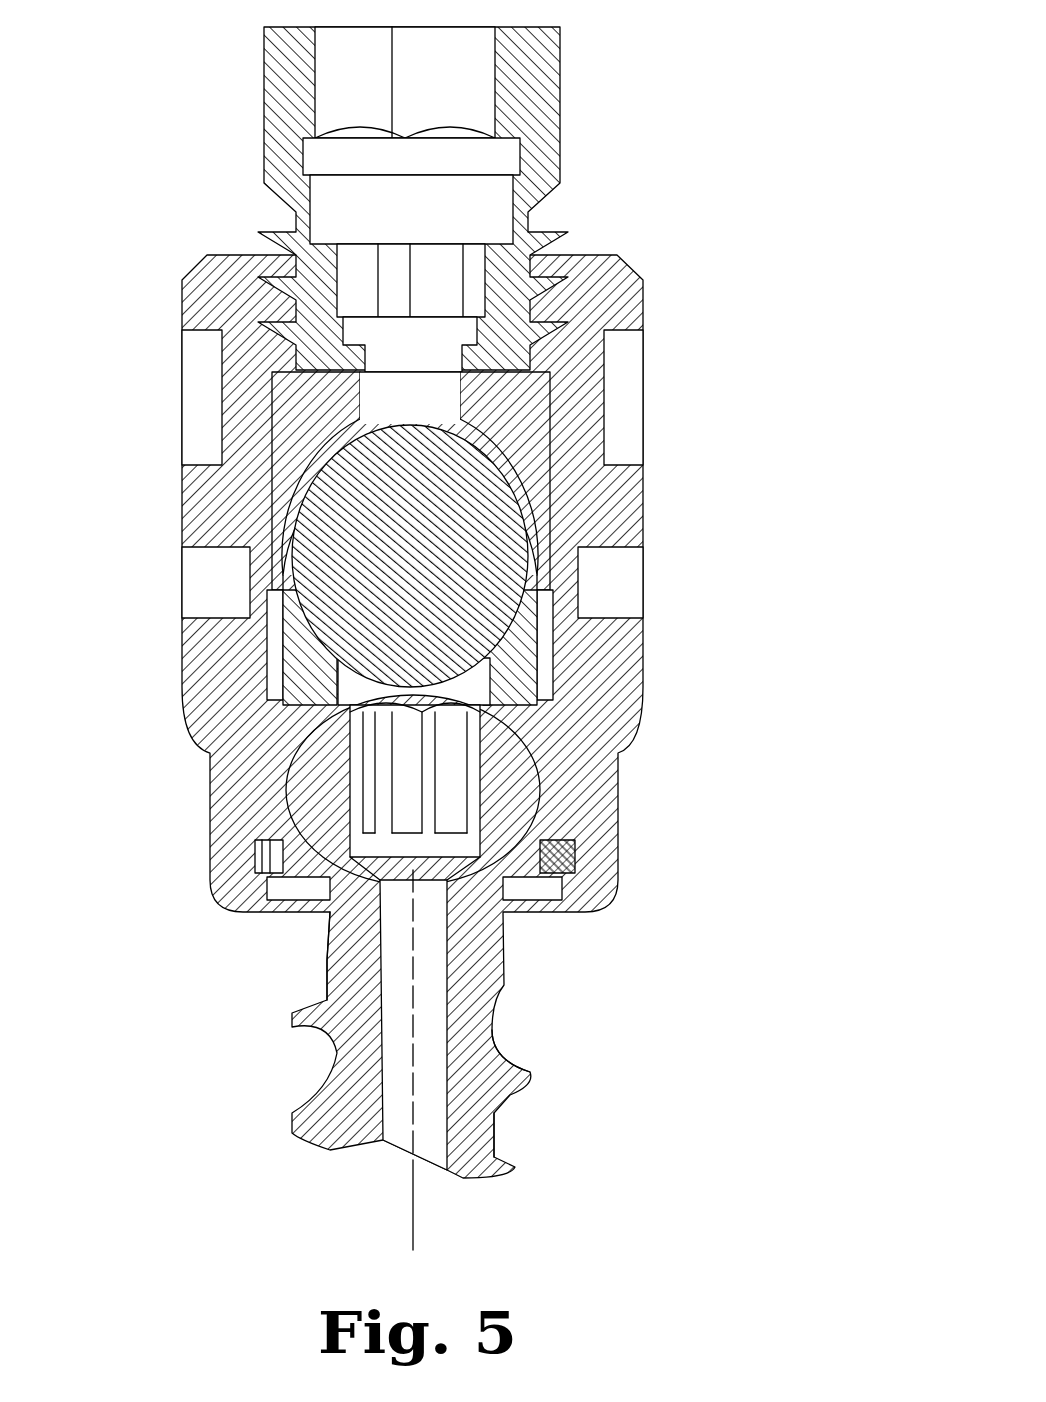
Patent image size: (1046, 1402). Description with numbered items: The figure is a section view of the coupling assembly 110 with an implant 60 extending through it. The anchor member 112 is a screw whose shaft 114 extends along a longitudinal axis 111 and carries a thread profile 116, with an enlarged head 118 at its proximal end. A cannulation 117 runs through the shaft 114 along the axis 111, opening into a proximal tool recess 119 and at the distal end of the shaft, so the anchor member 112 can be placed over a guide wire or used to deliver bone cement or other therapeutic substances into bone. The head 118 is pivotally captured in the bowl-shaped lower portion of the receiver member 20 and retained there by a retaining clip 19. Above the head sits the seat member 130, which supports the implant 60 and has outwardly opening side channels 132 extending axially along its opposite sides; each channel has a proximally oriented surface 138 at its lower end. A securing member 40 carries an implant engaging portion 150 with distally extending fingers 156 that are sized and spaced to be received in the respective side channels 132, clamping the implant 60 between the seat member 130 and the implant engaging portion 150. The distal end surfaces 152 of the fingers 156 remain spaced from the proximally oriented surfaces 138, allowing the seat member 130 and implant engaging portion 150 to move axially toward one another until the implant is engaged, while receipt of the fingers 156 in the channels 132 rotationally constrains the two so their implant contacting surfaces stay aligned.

The coupling assembly 110 is at (501, 635).
The receiver member 20 is at (650, 276).
The securing member 40 is at (570, 80).
The implant 60 is at (500, 565).
The implant engaging portion 150 is at (292, 405).
The fingers 156 is at (250, 522).
The distal end surfaces 152 is at (248, 585).
The side channels 132 is at (272, 630).
The proximally oriented surfaces 138 is at (276, 676).
The seat member 130 is at (262, 737).
The retaining clip 19 is at (585, 868).
The enlarged head 118 is at (525, 790).
The proximal tool recess 119 is at (510, 885).
The cannulation 117 is at (430, 1020).
The thread profile 116 is at (520, 1078).
The anchor member 112 is at (496, 1120).
The shaft 114 is at (330, 990).
The longitudinal axis 111 is at (413, 1215).